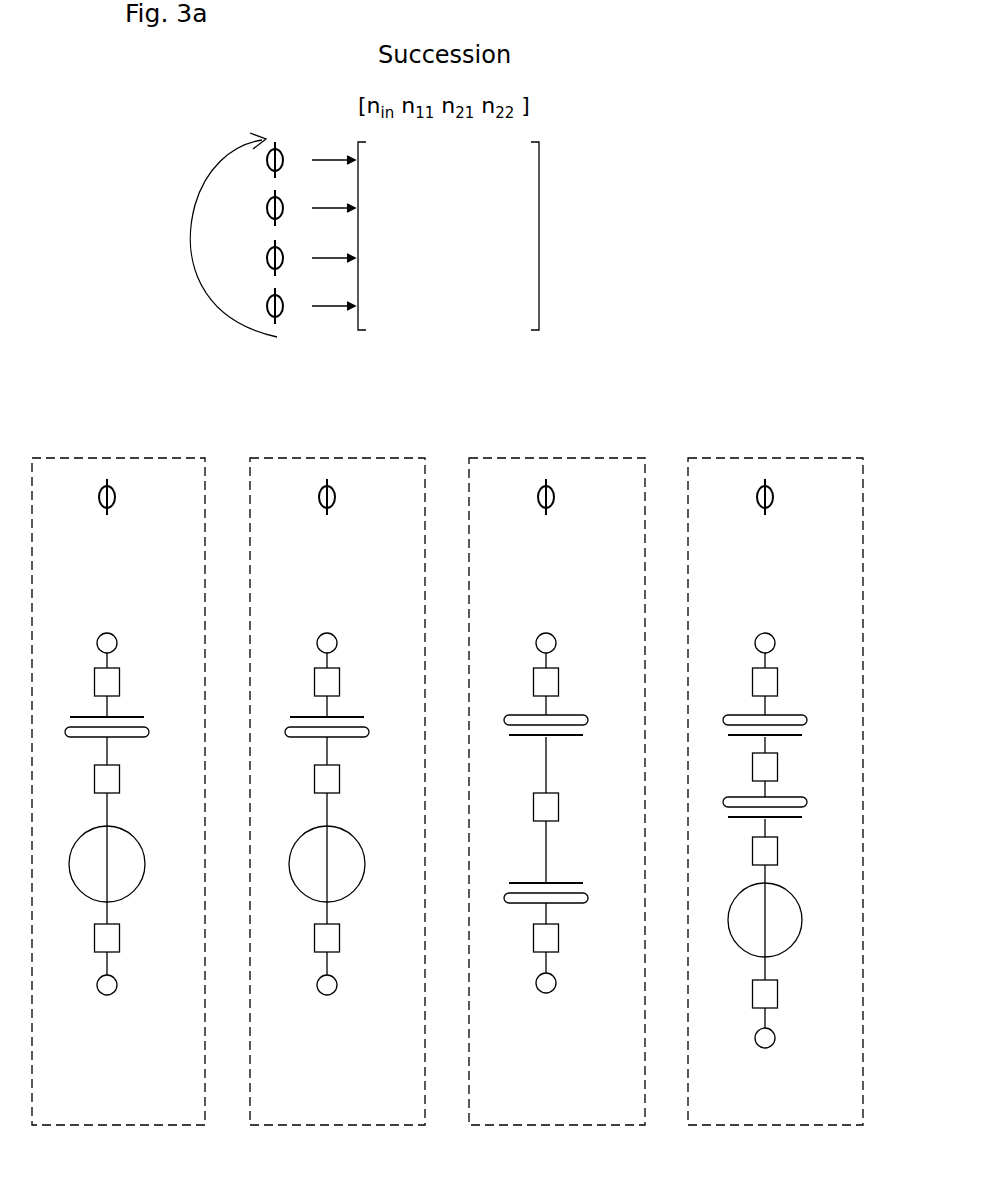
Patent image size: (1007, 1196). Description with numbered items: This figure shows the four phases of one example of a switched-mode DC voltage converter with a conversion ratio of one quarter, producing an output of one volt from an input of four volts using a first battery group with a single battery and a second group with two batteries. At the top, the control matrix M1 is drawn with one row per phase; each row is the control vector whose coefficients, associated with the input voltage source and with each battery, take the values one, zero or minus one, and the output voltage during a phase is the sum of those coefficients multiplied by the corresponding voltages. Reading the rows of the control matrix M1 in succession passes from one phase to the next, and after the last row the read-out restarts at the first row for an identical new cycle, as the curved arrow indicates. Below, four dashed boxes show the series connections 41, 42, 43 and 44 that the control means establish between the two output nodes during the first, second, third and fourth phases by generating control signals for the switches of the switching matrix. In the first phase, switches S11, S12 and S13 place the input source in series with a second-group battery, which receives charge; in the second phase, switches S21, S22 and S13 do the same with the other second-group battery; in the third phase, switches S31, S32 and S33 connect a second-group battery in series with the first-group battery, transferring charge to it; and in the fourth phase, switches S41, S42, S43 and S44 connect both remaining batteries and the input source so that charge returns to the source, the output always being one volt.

The control matrix M1 is at (577, 175).
The series connection 41 is at (118, 814).
The series connection 42 is at (337, 814).
The series connection 43 is at (557, 814).
The phase 4 circuit configuration 44 is at (775, 814).
The switch S11 is at (82, 683).
The switch S12 is at (82, 780).
The switch S13 is at (82, 939).
The switch S21 is at (302, 683).
The switch S22 is at (302, 780).
The switch S31 is at (521, 683).
The switch S32 is at (521, 808).
The switch S33 is at (521, 939).
The switch S41 is at (740, 683).
The switch S42 is at (740, 768).
The switch S43 is at (740, 852).
The switch S44 is at (740, 995).